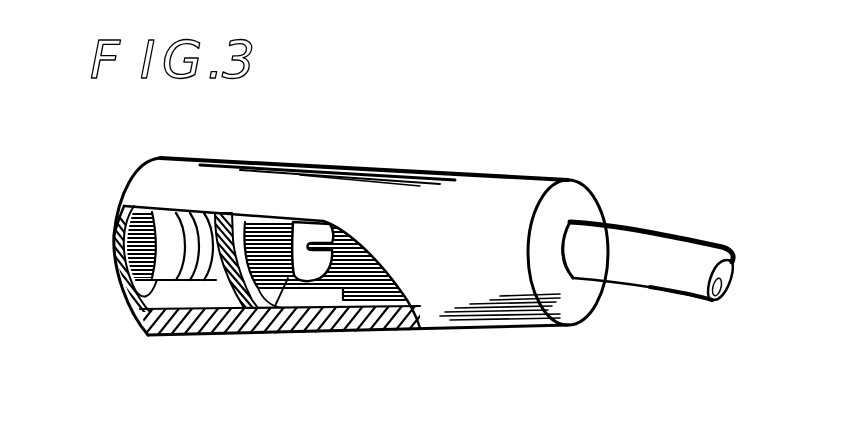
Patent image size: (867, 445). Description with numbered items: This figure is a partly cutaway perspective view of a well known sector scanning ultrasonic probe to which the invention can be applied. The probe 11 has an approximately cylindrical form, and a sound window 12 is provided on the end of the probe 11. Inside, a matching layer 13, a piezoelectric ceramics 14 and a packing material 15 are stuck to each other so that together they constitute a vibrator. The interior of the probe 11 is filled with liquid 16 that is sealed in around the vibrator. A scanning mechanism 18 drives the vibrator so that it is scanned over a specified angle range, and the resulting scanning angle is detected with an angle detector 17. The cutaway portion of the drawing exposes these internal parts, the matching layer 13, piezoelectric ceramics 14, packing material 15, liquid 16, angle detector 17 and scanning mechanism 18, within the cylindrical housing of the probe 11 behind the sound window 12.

The probe 11 is at (510, 195).
The sound window 12 is at (117, 228).
The matching layer 13 is at (120, 257).
The piezoelectric ceramics 14 is at (137, 316).
The packing material 15 is at (172, 262).
The liquid 16 is at (215, 297).
The angle detector 17 is at (302, 332).
The scanning mechanism 18 is at (383, 306).